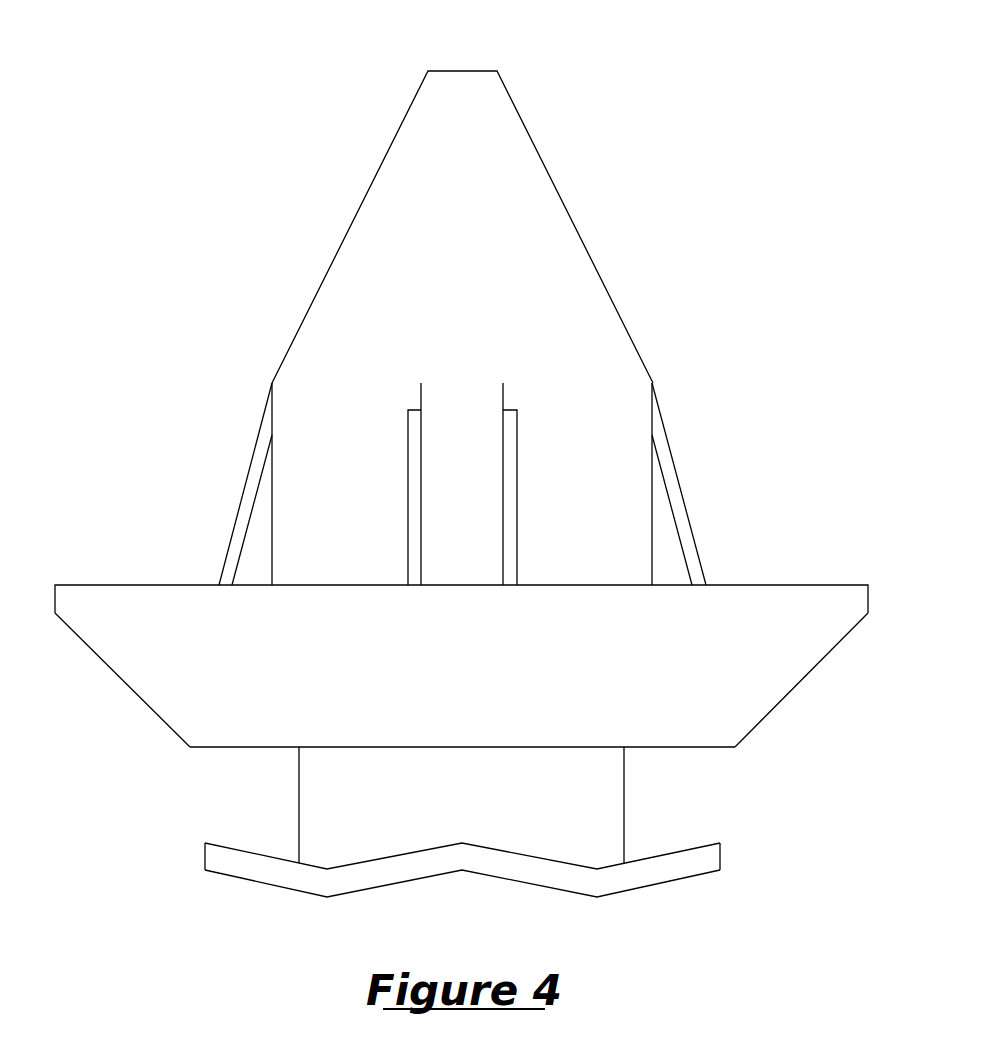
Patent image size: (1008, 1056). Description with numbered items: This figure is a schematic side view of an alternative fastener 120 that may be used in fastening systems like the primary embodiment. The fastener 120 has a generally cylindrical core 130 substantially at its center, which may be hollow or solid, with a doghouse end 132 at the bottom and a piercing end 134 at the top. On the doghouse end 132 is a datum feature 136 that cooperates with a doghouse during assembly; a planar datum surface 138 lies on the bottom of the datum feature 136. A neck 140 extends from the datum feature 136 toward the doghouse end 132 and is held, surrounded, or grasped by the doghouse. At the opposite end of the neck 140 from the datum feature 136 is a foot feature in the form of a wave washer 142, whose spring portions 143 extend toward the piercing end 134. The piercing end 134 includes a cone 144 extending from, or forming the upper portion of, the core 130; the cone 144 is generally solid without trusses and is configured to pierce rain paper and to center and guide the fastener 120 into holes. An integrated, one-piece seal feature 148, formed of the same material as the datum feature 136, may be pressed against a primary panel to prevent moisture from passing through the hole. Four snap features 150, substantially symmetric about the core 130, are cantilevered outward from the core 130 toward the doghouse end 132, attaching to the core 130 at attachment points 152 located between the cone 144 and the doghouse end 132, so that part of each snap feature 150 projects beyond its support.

The fastener 120 is at (728, 130).
The core 130 is at (391, 388).
The doghouse end 132 is at (108, 833).
The piercing end 134 is at (171, 166).
The datum feature 136 is at (720, 741).
The planar datum surface 138 is at (225, 748).
The neck 140 is at (428, 813).
The wave washer 142 is at (590, 888).
The spring portions 143 is at (225, 860).
The cone 144 is at (407, 166).
The seal feature 148 is at (93, 605).
The snap features 150 is at (252, 470).
The attachment points 152 is at (272, 383).